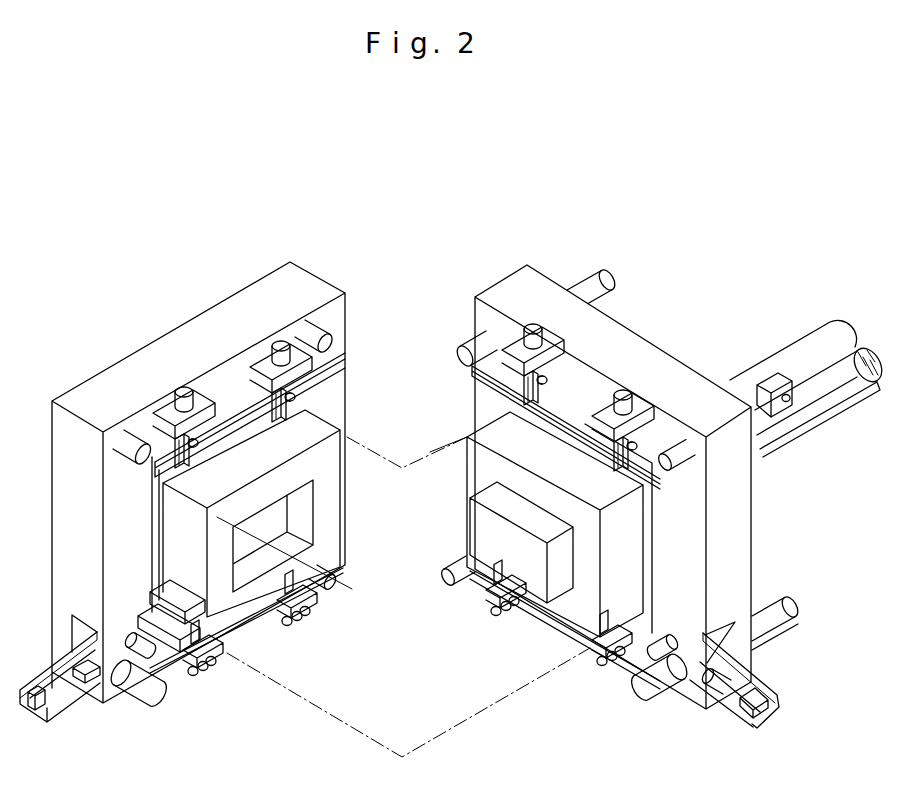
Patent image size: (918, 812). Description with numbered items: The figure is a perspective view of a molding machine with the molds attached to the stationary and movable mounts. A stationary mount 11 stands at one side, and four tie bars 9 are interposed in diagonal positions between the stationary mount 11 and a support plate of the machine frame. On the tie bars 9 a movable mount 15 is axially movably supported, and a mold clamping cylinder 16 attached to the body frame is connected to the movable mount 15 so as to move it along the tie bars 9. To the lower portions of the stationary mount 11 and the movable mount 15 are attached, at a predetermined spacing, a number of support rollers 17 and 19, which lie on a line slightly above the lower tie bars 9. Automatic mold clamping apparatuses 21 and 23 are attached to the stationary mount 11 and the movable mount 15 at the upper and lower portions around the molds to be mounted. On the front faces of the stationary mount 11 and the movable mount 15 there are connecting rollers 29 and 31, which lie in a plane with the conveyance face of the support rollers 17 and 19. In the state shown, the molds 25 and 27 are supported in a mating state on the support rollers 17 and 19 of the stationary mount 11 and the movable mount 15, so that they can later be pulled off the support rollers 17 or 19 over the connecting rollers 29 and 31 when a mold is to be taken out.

The tie bars 9 is at (583, 281).
The stationary mount 11 is at (236, 318).
The movable mount 15 is at (503, 293).
The mold clamping cylinder 16 is at (790, 360).
The support rollers 17 is at (182, 680).
The support rollers 19 is at (645, 707).
The automatic mold clamping apparatuses 21 is at (256, 344).
The automatic mold clamping apparatuses 23 is at (639, 396).
The mold 25 is at (300, 440).
The mold 27 is at (513, 437).
The connecting roller 29 is at (83, 687).
The connecting roller 31 is at (765, 725).